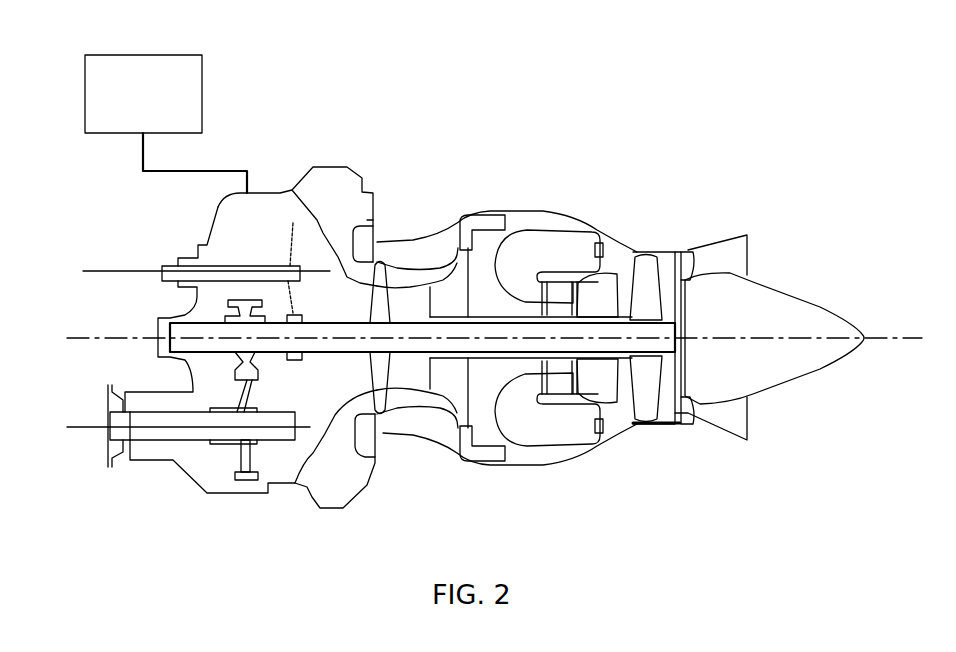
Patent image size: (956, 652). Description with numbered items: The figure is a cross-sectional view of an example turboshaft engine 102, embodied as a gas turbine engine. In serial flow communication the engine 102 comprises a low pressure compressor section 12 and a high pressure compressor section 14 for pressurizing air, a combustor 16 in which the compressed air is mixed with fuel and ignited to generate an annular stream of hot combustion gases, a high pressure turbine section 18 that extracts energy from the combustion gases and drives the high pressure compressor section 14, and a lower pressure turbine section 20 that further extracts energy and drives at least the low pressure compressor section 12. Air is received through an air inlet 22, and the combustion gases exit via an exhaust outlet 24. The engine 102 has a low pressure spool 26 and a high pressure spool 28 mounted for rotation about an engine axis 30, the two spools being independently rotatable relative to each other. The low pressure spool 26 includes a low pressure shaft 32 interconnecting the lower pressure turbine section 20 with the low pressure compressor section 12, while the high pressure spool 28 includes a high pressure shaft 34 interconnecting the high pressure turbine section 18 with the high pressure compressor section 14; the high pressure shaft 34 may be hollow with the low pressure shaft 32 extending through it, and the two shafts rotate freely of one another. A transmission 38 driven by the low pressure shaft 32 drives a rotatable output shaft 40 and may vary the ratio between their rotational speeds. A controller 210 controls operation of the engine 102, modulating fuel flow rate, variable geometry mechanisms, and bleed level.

The low pressure compressor section 12 is at (367, 220).
The high pressure compressor section 14 is at (452, 293).
The combustor 16 is at (557, 257).
The high pressure turbine section 18 is at (575, 358).
The lower pressure turbine section 20 is at (642, 260).
The air inlet 22 is at (310, 503).
The exhaust outlet 24 is at (735, 423).
The low pressure spool 26 is at (400, 354).
The high pressure spool 28 is at (483, 362).
The engine axis 30 is at (905, 338).
The low pressure shaft 32 is at (332, 353).
The high pressure shaft 34 is at (523, 346).
The transmission 38 is at (213, 370).
The output shaft 40 is at (153, 461).
The turboshaft engine 102 is at (728, 175).
The controller 210 is at (166, 124).